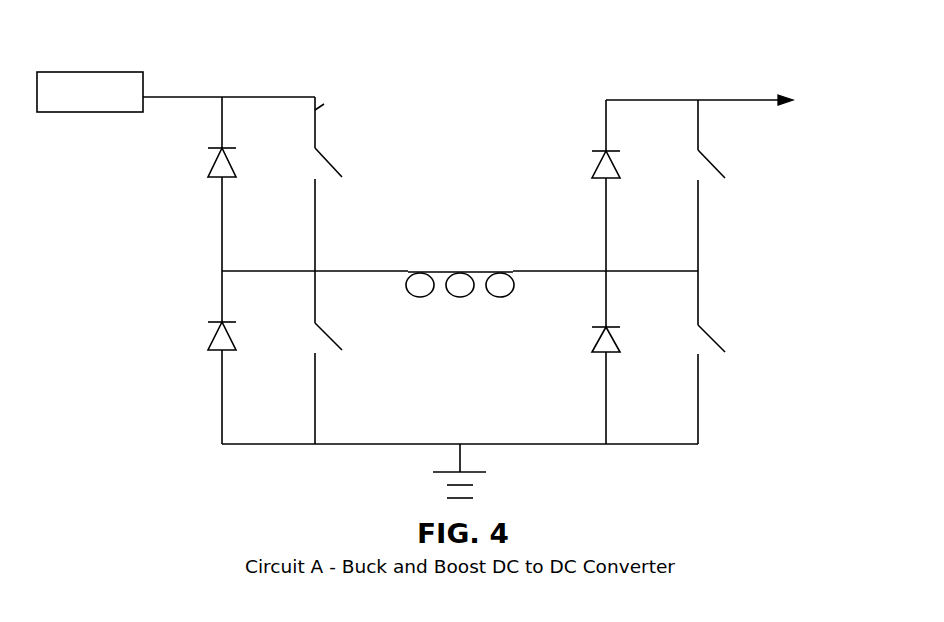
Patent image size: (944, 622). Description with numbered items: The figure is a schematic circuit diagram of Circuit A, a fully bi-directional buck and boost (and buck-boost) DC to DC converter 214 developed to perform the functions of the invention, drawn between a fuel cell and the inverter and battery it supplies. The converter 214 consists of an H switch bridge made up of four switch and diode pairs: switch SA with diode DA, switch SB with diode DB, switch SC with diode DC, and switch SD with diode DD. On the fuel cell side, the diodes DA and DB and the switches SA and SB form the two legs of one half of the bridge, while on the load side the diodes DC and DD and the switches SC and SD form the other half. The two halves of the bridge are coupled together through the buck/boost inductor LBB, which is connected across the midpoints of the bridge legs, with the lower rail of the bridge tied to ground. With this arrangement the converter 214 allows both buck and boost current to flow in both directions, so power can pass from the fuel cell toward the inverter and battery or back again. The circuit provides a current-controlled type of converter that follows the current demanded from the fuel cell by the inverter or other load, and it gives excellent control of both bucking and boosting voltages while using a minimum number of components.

The DC to DC converter circuit 214 is at (449, 257).
The diode D_A DA is at (196, 162).
The diode D_B DB is at (196, 336).
The diode D_C DC is at (581, 164).
The diode D_D DD is at (586, 338).
The switch S_A SA is at (345, 179).
The switch S_B SB is at (345, 351).
The switch S_C SC is at (728, 180).
The switch S_D SD is at (729, 352).
The buck/boost inductor L_BB LBB is at (460, 308).